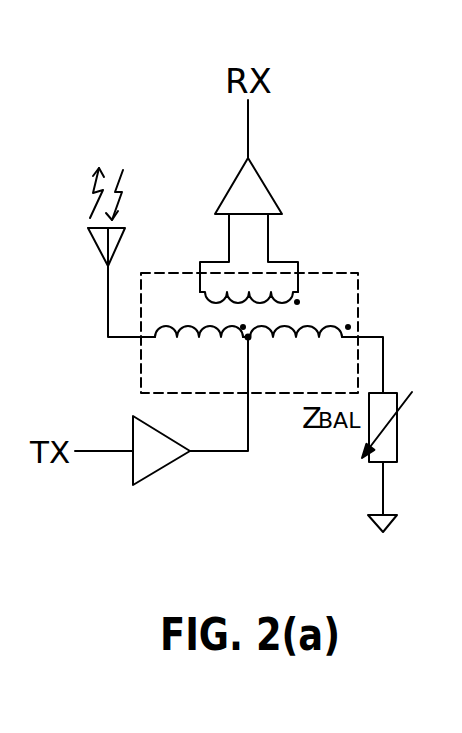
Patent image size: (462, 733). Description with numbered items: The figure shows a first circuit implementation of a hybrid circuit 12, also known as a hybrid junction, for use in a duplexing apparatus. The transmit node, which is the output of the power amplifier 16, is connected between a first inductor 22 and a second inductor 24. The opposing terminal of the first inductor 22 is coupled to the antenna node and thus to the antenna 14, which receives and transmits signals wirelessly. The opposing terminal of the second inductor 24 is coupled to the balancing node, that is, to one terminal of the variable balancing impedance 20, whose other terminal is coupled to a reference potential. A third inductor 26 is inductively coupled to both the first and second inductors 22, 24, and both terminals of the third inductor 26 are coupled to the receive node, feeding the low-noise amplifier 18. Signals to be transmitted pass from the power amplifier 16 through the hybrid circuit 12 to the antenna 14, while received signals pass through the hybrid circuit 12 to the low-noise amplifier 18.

The hybrid circuit 12 is at (337, 273).
The antenna 14 is at (95, 248).
The power amplifier 16 is at (163, 468).
The low-noise amplifier 18 is at (232, 187).
The variable impedance 20 is at (362, 436).
The first inductor 22 is at (197, 345).
The second inductor 24 is at (302, 343).
The third inductor 26 is at (205, 298).